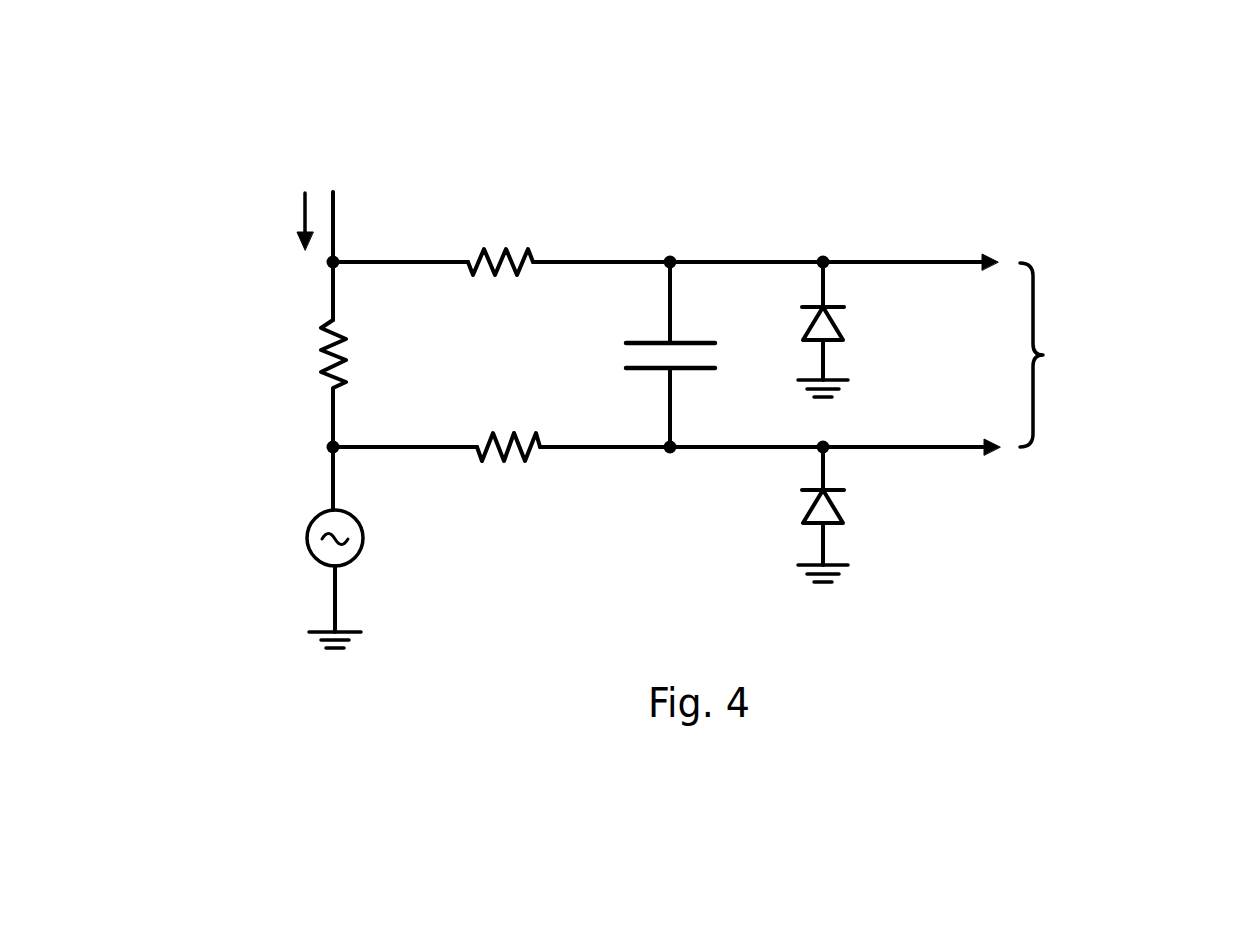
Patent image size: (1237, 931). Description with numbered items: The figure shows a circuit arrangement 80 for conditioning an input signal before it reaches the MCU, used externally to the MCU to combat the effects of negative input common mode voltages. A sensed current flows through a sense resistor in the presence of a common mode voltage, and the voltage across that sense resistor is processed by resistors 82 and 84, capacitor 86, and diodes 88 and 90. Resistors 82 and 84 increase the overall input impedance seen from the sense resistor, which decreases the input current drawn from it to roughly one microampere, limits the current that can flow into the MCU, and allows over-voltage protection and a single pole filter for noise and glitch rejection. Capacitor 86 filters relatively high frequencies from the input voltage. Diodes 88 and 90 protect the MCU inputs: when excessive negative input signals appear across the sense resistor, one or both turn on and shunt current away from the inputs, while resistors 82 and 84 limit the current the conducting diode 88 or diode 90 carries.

The circuit arrangement 80 is at (697, 346).
The resistor 82 is at (527, 266).
The resistor 84 is at (529, 452).
The capacitor 86 is at (692, 340).
The diode 88 is at (834, 322).
The diode 90 is at (834, 505).